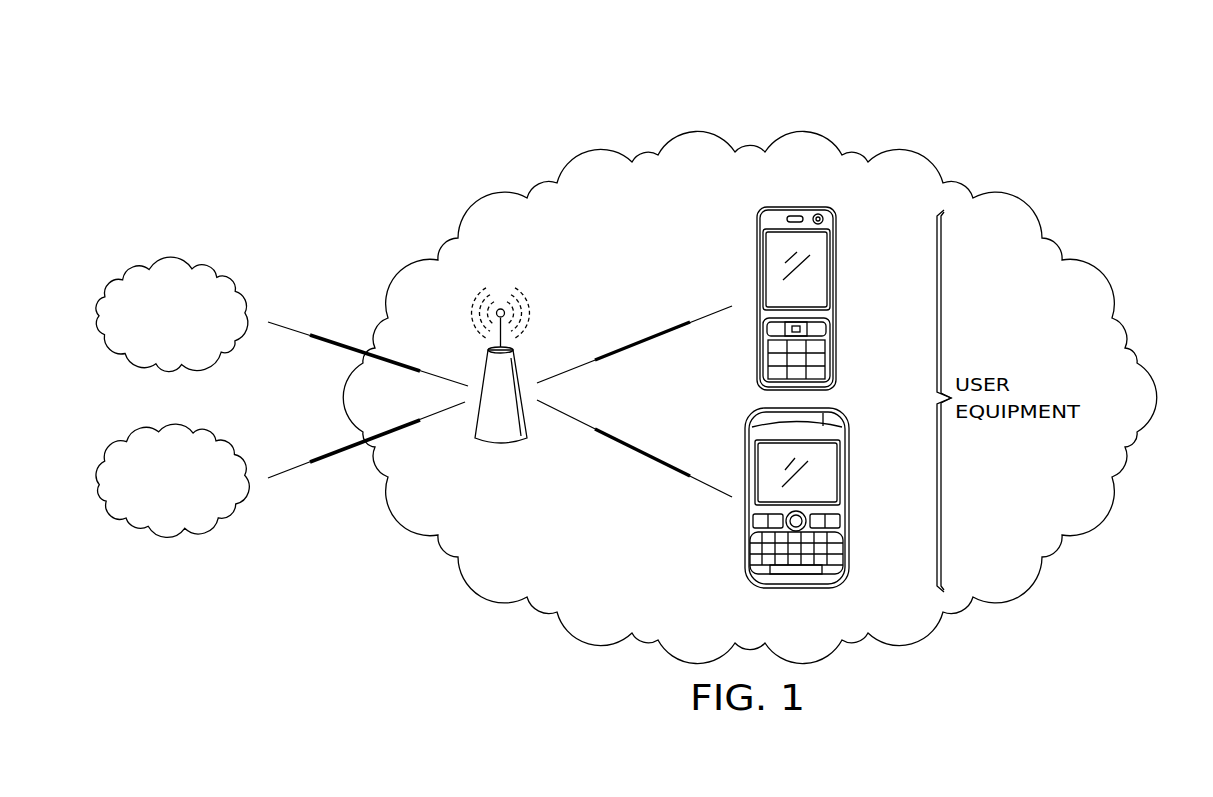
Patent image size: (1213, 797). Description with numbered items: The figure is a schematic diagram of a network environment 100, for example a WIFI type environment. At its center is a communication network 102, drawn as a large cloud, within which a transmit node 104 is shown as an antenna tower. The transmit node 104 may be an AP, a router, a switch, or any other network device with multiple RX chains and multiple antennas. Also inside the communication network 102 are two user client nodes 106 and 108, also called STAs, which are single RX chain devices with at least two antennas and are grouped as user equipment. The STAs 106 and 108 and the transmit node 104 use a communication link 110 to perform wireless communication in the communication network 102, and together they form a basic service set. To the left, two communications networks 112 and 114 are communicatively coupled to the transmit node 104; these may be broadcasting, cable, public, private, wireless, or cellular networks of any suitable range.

The network environment 100 is at (458, 78).
The communication network 102 is at (810, 128).
The transmit node 104 is at (500, 446).
The user client node 106 is at (838, 300).
The user client node 108 is at (850, 496).
The communication link 110 is at (680, 322).
The communications network 112 is at (136, 262).
The communications network 114 is at (135, 535).